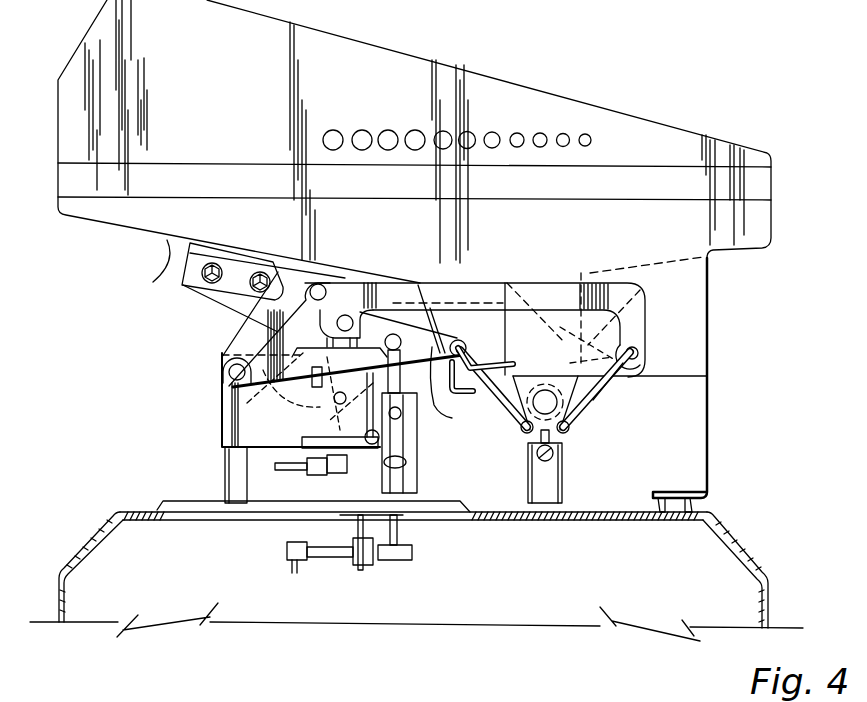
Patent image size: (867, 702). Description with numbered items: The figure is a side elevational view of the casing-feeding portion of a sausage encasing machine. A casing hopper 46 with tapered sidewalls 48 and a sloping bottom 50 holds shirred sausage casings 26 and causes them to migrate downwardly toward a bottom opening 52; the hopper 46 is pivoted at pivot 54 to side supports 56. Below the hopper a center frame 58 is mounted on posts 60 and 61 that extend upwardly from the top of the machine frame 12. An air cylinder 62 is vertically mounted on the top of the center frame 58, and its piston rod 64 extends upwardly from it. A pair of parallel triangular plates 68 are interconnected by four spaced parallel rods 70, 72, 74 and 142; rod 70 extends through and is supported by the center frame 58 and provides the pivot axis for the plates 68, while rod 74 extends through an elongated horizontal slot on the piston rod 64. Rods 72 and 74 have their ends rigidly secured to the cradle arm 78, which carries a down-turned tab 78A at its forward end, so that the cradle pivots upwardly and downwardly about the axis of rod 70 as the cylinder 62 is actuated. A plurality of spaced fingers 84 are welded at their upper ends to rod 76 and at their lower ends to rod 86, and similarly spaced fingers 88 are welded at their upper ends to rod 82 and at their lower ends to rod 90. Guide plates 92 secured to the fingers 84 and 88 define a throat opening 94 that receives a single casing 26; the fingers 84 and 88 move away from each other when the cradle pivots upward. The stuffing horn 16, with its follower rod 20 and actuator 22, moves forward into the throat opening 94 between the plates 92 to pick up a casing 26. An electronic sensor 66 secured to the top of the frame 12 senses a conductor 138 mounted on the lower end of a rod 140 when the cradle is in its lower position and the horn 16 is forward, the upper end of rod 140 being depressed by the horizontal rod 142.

The frame 12 is at (202, 492).
The stuffing horn 16 is at (628, 398).
The follower rod 20 is at (563, 460).
The actuator 22 is at (563, 447).
The shirred sausage casing 26 is at (512, 352).
The casing hopper 46 is at (447, 108).
The tapered sidewalls 48 is at (537, 82).
The sloping bottom 50 is at (165, 248).
The bottom opening 52 is at (572, 258).
The pivot 54 is at (222, 380).
The side supports 56 is at (182, 288).
The center frame 58 is at (226, 398).
The post 60 is at (243, 447).
The post 61 is at (408, 474).
The air cylinder 62 is at (222, 404).
The piston rod 64 is at (240, 317).
The electronic sensor 66 is at (343, 563).
The triangular plates 68 is at (258, 320).
The rod 70 is at (233, 363).
The rod 72 is at (345, 314).
The rod 74 is at (349, 287).
The rod 76 is at (436, 393).
The cradle arm 78 is at (650, 288).
The down-turned tab 78A is at (637, 312).
The rod 82 is at (633, 343).
The fingers 84 is at (520, 422).
The rod 86 is at (521, 432).
The fingers 88 is at (600, 402).
The rod 90 is at (573, 423).
The guide plates 92 is at (505, 320).
The throat opening 94 is at (535, 368).
The conductor 138 is at (403, 562).
The rod 140 is at (407, 530).
The horizontal rod 142 is at (454, 410).